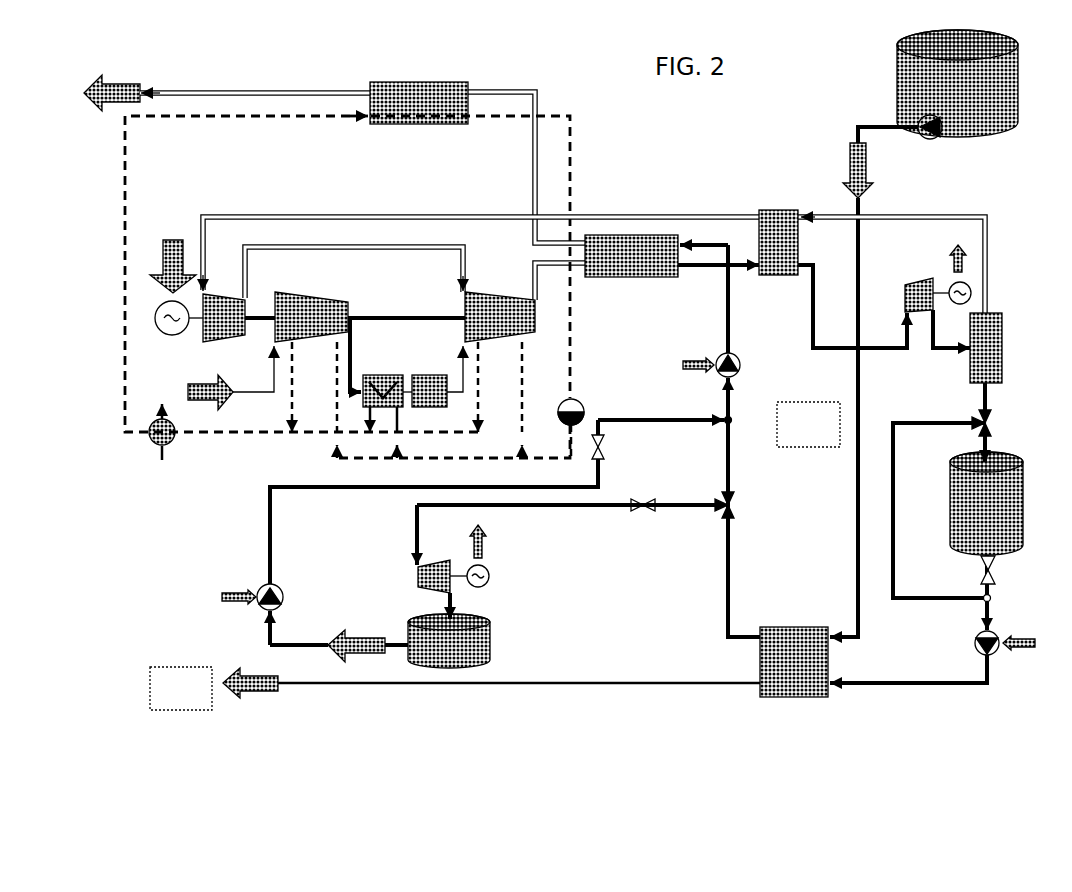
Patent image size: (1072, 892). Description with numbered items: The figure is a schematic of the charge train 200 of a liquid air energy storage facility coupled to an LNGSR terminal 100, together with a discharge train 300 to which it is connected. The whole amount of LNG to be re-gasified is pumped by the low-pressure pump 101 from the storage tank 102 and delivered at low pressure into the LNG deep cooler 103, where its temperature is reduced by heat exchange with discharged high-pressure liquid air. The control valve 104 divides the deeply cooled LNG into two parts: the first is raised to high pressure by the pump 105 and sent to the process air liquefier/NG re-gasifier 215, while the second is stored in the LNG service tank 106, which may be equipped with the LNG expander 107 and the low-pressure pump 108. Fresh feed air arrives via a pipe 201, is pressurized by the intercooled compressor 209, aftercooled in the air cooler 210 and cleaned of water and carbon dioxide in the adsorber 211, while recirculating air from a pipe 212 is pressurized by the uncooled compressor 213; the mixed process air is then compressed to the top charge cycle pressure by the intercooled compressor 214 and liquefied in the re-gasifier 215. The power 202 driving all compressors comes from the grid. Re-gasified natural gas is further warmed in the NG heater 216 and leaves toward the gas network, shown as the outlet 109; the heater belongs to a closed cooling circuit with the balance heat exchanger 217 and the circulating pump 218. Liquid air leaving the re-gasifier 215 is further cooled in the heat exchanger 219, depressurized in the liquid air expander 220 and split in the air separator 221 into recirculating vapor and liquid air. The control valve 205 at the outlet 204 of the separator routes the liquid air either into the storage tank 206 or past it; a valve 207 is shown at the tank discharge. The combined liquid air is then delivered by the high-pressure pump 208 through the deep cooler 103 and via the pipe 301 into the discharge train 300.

The LNGSR terminal 100 is at (808, 424).
The low-pressure pump 101 is at (925, 140).
The storage tank 102 is at (986, 140).
The LNG deep cooler 103 is at (772, 627).
The control valve 104 is at (738, 498).
The pump 105 is at (740, 360).
The LNG service tank 106 is at (494, 628).
The LNG expander 107 is at (418, 581).
The low-pressure pump 108 is at (284, 592).
The exhaust gas outlet 109 is at (170, 92).
The charge train 200 is at (347, 287).
The pipe 201 is at (188, 390).
The power 202 is at (172, 238).
The outlet 204 is at (990, 416).
The control valve 205 is at (993, 433).
The storage tank 206 is at (952, 542).
The valve 207 is at (996, 588).
The high-pressure pump 208 is at (976, 643).
The intercooled compressor 209 is at (308, 296).
The air cooler 210 is at (372, 375).
The adsorber 211 is at (432, 375).
The pipe 212 is at (240, 216).
The uncooled compressor 213 is at (243, 297).
The intercooled compressor 214 is at (476, 296).
The process air liquefier/NG re-gasifier 215 is at (630, 235).
The NG heater 216 is at (372, 124).
The balance heat exchanger 217 is at (150, 443).
The pump 218 is at (586, 404).
The heat exchanger 219 is at (772, 211).
The liquid air expander 220 is at (913, 284).
The air separator 221 is at (968, 366).
The DCH train 300 is at (181, 688).
The pipe 301 is at (588, 683).